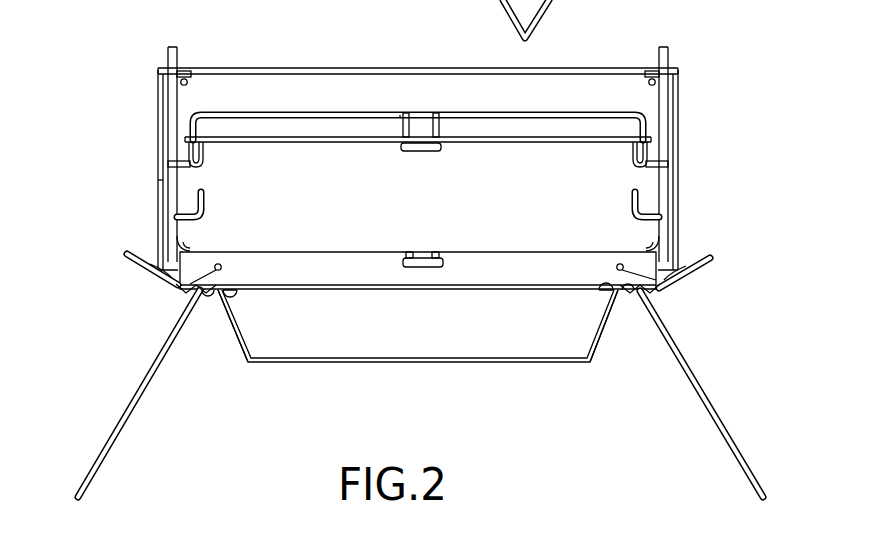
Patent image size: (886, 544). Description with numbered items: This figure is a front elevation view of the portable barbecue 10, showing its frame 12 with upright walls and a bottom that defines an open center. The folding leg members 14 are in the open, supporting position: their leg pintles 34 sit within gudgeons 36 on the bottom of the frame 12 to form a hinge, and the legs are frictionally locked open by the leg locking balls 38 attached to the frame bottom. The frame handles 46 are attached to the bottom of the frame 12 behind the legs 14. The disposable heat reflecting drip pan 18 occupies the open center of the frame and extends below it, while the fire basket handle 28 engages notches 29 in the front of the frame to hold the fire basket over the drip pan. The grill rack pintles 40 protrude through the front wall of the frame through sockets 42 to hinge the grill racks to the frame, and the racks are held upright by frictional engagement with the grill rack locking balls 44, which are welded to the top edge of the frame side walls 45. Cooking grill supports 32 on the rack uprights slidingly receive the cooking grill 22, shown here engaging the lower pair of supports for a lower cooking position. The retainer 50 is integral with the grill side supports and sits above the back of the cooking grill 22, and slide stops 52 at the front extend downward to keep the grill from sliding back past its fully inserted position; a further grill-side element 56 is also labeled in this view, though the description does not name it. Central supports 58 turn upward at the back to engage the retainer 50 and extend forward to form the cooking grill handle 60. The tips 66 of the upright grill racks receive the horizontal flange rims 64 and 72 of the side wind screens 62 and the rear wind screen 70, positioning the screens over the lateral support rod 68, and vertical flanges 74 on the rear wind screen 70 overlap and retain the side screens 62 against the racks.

The portable barbecue 10 is at (136, 20).
The frame 12 is at (555, 272).
The folding leg members 14 is at (130, 396).
The disposable heat reflecting drip pan 18 is at (392, 363).
The cooking grill 22 is at (300, 130).
The fire basket handle 28 is at (444, 264).
The notches 29 is at (437, 253).
The cooking grill supports 32 is at (205, 156).
The leg pintles 34 is at (232, 305).
The gudgeons 36 is at (232, 296).
The leg locking balls 38 is at (209, 297).
The grill rack pintles 40 is at (208, 292).
The sockets 42 is at (208, 272).
The grill rack locking balls 44 is at (190, 243).
The frame side walls 45 is at (170, 256).
The frame handles 46 is at (128, 264).
The retainer 50 is at (356, 113).
The slide stops 52 is at (186, 156).
The tube portion 56 is at (512, 136).
The central supports 58 is at (428, 128).
The cooking grill handle 60 is at (434, 152).
The side wind screens 62 is at (160, 122).
The horizontal flange rim 64 is at (184, 72).
The tips 66 is at (166, 57).
The lateral support rod 68 is at (188, 82).
The rear wind screen 70 is at (352, 200).
The horizontal flange rim 72 is at (262, 70).
The vertical flanges 74 is at (160, 184).